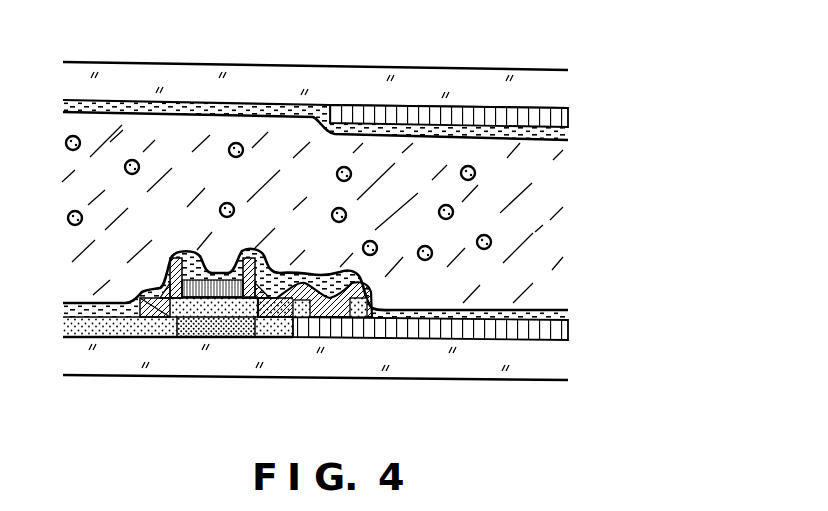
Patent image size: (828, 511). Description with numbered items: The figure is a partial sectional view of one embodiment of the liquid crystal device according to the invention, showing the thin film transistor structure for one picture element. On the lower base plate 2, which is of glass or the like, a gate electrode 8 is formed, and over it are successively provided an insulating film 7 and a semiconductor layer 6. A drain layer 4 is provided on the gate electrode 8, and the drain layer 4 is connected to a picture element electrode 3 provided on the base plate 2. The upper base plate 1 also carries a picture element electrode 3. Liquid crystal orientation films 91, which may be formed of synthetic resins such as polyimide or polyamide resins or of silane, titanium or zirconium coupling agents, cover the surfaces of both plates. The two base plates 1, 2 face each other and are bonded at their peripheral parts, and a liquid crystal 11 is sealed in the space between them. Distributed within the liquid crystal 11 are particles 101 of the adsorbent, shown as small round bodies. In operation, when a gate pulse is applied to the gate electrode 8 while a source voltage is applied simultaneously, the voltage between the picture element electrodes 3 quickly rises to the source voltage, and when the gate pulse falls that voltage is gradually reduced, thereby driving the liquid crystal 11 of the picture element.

The base plate 1 is at (533, 92).
The base plate 2 is at (545, 365).
The picture element electrode 3 is at (484, 118).
The drain layer 4 is at (265, 325).
The semiconductor layer 6 is at (222, 300).
The insulating film 7 is at (108, 327).
The gate electrode 8 is at (189, 330).
The liquid crystal 11 is at (428, 160).
The liquid crystal orientation film 91 is at (358, 125).
The particles of the adsorbent 101 is at (236, 143).